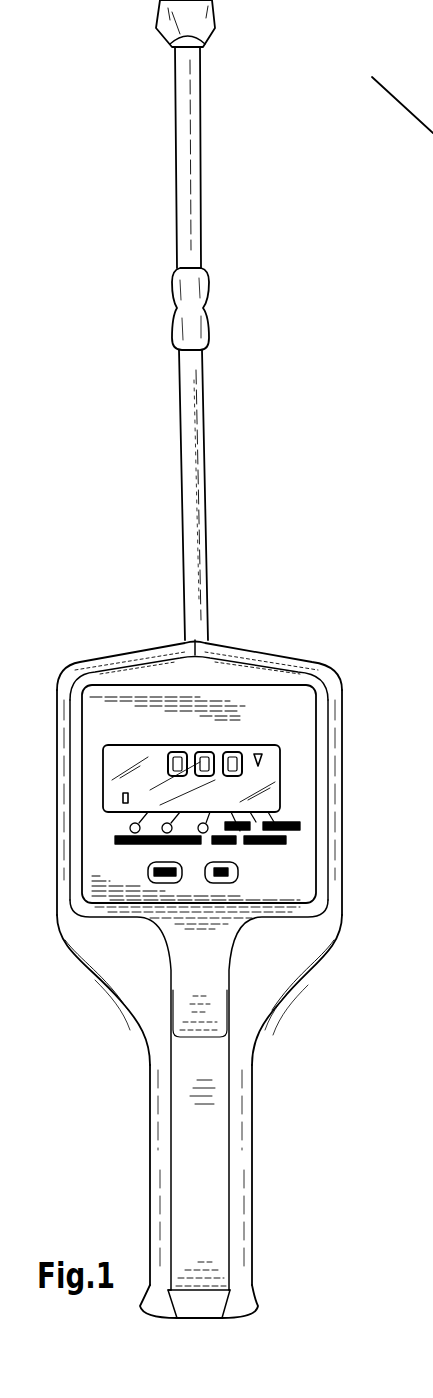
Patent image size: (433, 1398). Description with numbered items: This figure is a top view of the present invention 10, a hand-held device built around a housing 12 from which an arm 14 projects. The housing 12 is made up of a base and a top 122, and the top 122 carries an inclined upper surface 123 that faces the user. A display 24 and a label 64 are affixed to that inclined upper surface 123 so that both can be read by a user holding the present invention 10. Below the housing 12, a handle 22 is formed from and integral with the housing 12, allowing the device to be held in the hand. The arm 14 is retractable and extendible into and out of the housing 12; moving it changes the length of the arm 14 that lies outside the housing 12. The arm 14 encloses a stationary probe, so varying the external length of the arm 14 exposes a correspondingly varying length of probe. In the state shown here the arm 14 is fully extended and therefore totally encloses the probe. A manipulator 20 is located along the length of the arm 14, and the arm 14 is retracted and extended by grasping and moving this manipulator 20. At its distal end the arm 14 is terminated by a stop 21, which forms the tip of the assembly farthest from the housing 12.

The present invention 10 is at (103, 1165).
The housing 12 is at (150, 1082).
The arm 14 is at (182, 472).
The manipulator 20 is at (207, 300).
The stop 21 is at (165, 20).
The handle 22 is at (249, 1119).
The display 24 is at (283, 773).
The label 64 is at (320, 805).
The top 122 is at (276, 950).
The inclined upper surface 123 is at (333, 668).